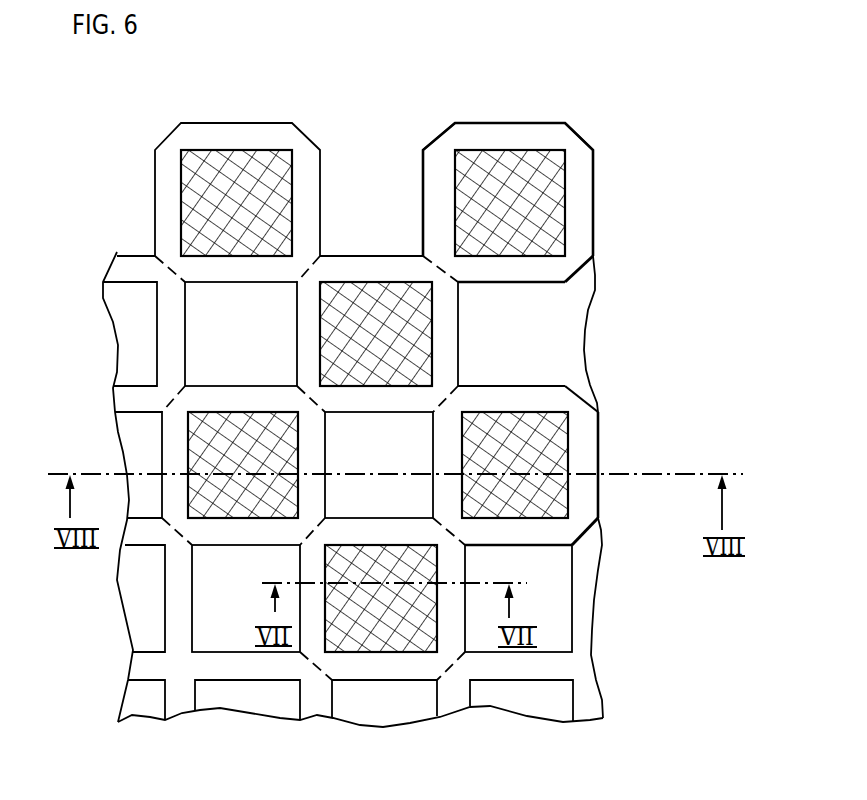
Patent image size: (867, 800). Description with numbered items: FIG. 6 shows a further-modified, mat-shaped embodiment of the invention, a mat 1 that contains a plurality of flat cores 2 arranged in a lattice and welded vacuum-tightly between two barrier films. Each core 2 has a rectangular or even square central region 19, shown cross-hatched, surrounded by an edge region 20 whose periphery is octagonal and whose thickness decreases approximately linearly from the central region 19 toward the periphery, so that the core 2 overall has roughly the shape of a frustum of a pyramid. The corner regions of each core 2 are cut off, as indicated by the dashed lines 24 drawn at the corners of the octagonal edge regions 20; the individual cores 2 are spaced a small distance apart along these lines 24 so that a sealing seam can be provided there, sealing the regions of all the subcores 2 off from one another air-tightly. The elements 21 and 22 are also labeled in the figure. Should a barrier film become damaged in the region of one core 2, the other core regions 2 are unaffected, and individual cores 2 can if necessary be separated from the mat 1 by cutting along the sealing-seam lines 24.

The mat 1 is at (514, 100).
The core 2 is at (554, 438).
The central region 19 is at (527, 172).
The edge region 20 is at (579, 204).
The bevelled edge 21 is at (583, 272).
The side wall 22 is at (603, 494).
The dashed lines 24 is at (443, 262).